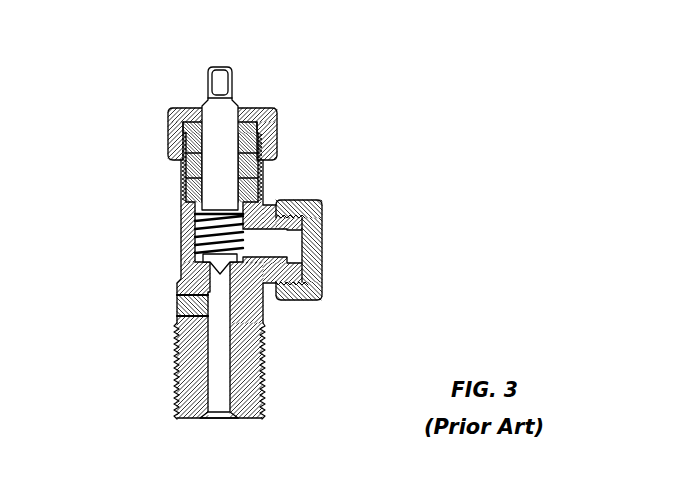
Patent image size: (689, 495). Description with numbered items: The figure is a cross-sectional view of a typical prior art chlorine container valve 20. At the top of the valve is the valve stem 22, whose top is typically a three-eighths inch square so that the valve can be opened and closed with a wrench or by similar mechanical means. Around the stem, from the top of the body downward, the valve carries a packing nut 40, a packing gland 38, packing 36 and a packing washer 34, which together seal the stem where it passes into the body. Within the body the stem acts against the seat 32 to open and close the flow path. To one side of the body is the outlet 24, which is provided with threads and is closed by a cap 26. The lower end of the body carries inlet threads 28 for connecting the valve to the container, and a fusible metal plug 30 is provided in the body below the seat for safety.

The chlorine container valve 20 is at (295, 241).
The valve stem 22 is at (232, 80).
The outlet 24 is at (321, 248).
The cap 26 is at (298, 202).
The inlet threads 28 is at (180, 370).
The fusible metal plug 30 is at (177, 302).
The seat 32 is at (207, 266).
The packing washer 34 is at (182, 190).
The packing 36 is at (182, 163).
The packing gland 38 is at (190, 132).
The packing nut 40 is at (172, 110).